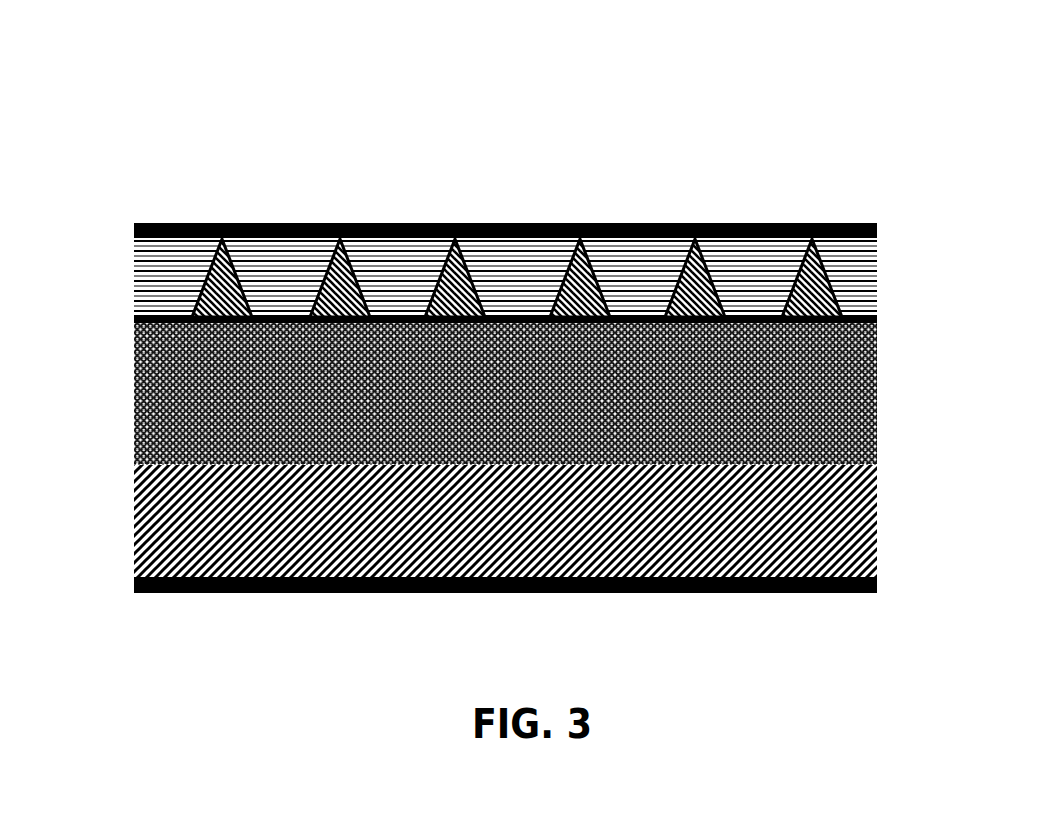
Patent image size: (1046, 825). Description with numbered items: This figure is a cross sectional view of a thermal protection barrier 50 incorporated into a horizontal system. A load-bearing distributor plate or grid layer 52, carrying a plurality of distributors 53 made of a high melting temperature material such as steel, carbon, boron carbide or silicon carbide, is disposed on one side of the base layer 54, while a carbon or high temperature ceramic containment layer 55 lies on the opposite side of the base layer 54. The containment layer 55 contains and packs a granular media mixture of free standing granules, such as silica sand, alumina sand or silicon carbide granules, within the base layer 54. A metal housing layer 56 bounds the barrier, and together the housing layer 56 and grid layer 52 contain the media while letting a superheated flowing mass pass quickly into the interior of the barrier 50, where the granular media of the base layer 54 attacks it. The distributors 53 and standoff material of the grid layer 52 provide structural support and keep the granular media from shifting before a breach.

The thermal protection barrier 50 is at (502, 330).
The distributor grid layer 52 is at (547, 245).
The distributors 53 is at (585, 245).
The base layer 54 is at (880, 412).
The containment layer 55 is at (128, 500).
The metal housing layer 56 is at (128, 228).